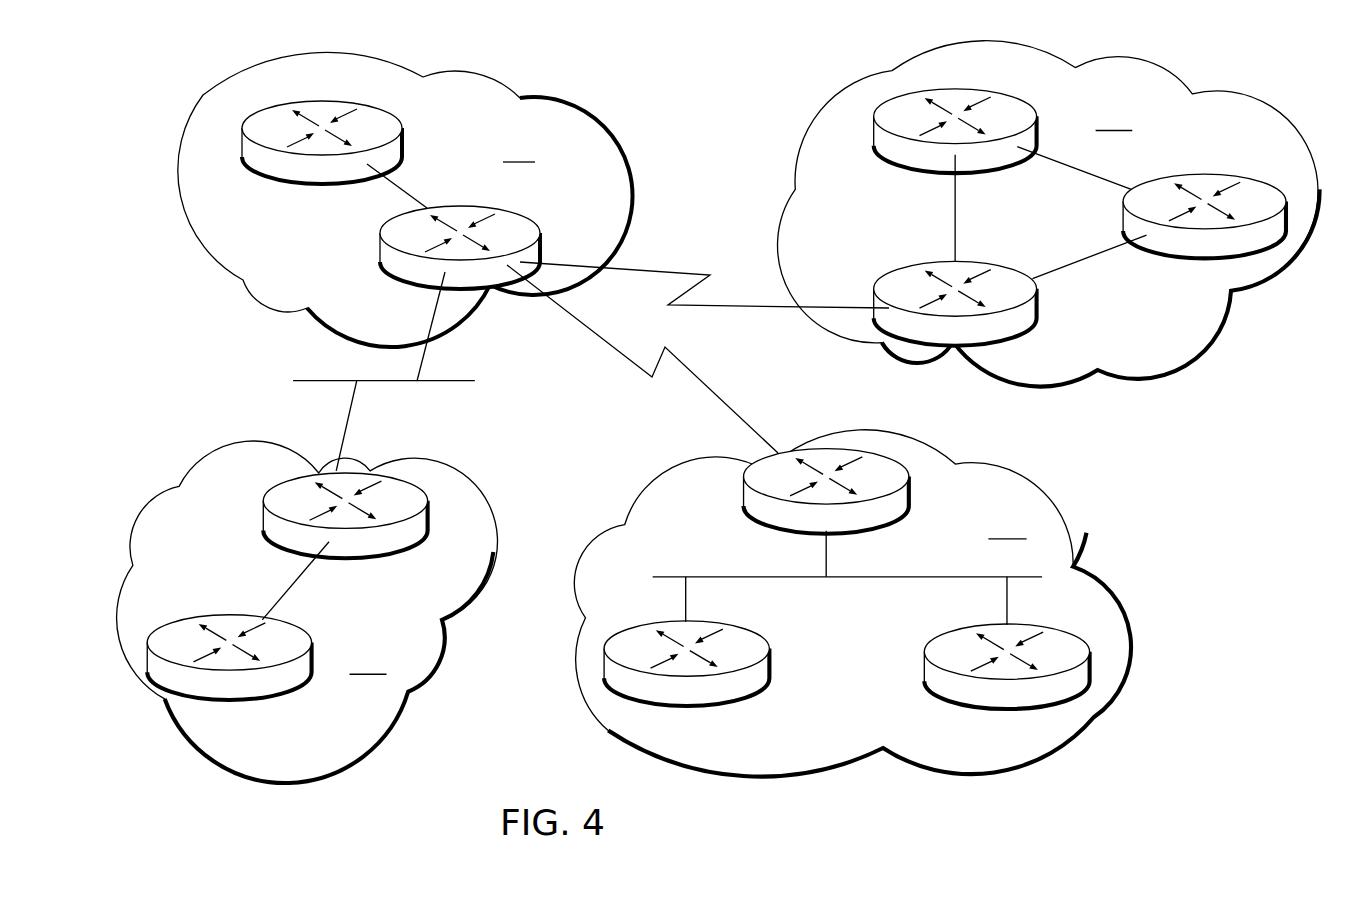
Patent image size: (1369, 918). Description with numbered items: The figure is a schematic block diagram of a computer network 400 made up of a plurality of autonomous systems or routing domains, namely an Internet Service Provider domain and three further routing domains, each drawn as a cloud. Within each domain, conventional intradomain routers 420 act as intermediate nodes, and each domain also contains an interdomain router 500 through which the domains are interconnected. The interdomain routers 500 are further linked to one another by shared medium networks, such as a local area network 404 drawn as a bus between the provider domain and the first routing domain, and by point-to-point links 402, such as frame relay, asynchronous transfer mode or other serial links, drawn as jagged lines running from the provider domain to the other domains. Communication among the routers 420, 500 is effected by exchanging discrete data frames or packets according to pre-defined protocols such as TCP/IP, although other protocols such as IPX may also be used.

The computer network 400 is at (1346, 105).
The point-to-point link 402 is at (784, 315).
The local area network 404 is at (446, 383).
The intradomain router 420 is at (322, 99).
The interdomain router 500 is at (524, 216).